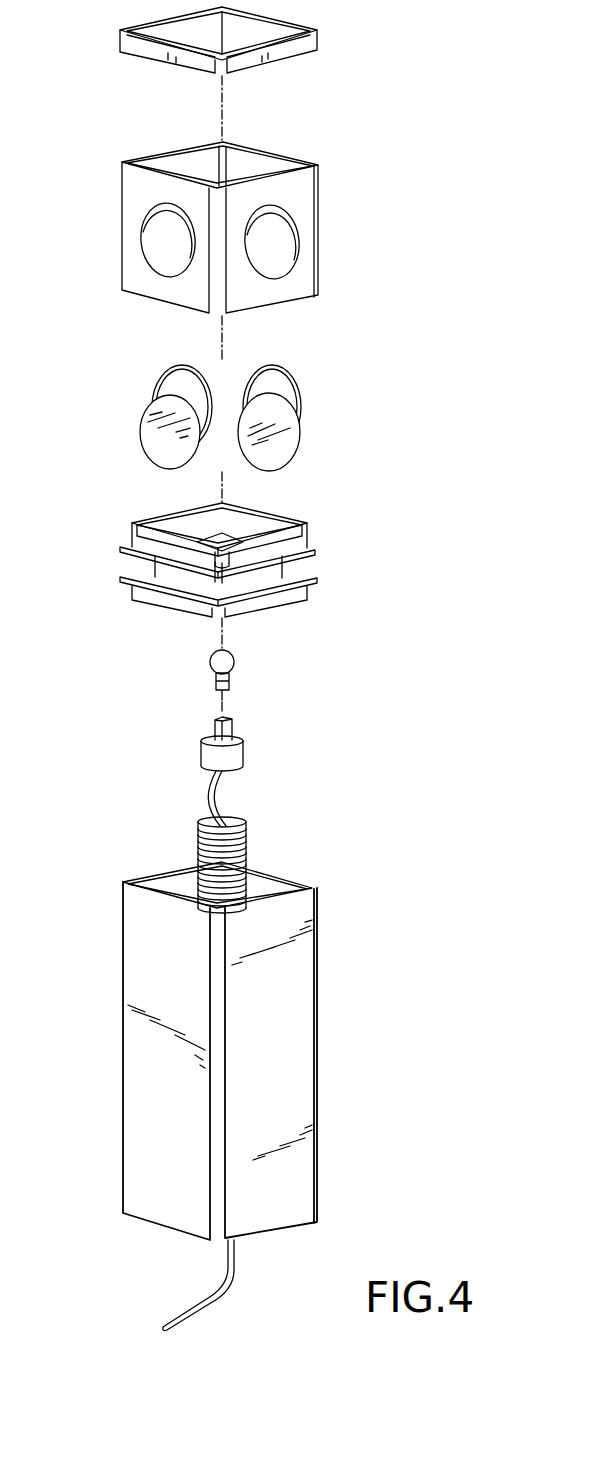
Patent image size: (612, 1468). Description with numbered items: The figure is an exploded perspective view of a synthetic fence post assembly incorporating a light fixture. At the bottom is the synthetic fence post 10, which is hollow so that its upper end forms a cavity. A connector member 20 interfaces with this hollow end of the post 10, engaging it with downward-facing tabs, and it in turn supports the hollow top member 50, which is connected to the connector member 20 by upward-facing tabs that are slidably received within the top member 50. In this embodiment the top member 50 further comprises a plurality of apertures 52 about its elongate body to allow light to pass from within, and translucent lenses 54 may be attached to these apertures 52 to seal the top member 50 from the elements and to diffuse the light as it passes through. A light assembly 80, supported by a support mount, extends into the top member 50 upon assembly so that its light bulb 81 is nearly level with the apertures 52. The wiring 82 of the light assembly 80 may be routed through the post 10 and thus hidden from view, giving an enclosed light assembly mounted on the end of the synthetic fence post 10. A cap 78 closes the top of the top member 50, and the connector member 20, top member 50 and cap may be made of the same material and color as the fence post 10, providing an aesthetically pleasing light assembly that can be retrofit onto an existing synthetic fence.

The top cap 78 is at (318, 31).
The top member 50 is at (236, 227).
The apertures 52 is at (157, 263).
The translucent lenses 54 is at (300, 428).
The connector member 20 is at (318, 548).
The light bulb 81 is at (232, 672).
The light assembly 80 is at (246, 745).
The synthetic fence post 10 is at (318, 1056).
The wiring 82 is at (205, 1292).